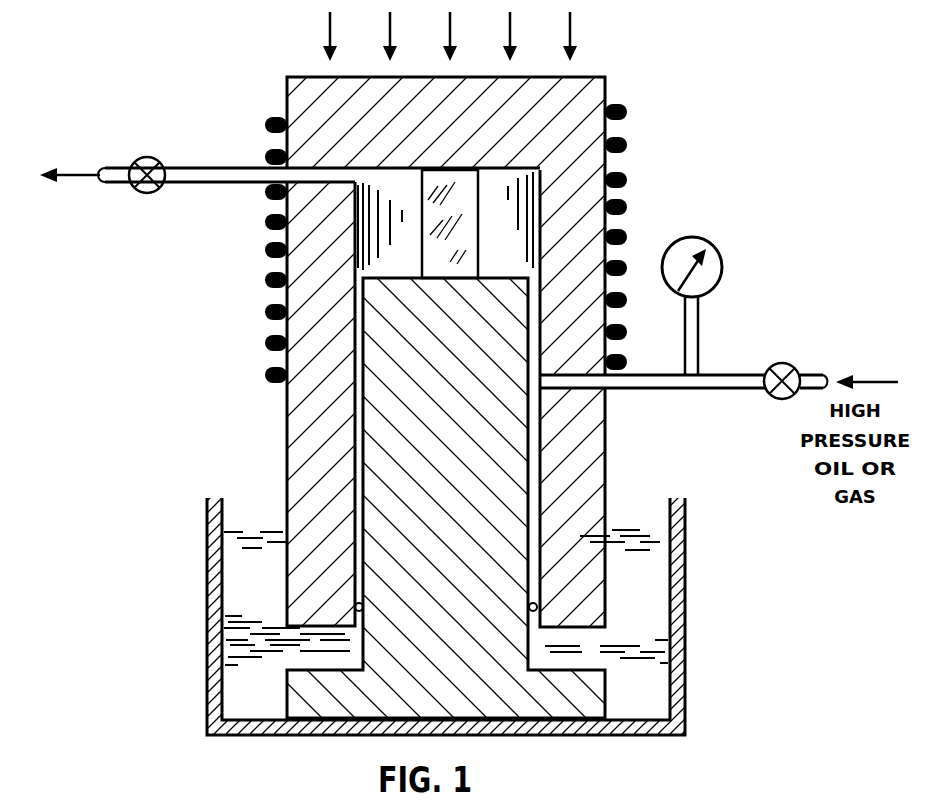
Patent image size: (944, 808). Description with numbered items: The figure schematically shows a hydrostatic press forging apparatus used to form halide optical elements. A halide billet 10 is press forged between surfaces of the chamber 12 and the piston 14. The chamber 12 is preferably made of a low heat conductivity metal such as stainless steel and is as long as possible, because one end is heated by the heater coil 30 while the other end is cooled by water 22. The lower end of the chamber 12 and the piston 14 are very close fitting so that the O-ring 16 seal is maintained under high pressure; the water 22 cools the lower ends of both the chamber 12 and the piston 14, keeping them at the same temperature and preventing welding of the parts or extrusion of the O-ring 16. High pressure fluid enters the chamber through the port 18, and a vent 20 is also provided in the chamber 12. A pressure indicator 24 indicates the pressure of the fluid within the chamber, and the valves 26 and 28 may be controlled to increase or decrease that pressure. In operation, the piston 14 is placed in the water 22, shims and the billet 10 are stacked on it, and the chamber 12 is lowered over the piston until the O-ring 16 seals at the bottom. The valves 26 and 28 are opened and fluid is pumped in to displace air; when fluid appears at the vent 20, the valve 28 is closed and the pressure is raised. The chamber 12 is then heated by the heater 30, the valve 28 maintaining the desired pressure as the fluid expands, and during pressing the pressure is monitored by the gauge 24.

The halide billet 10 is at (430, 262).
The chamber 12 is at (585, 467).
The piston 14 is at (400, 480).
The O-ring 16 is at (365, 603).
The port 18 is at (587, 383).
The vent 20 is at (332, 170).
The water 22 is at (657, 555).
The pressure indicator 24 is at (692, 237).
The valve 26 is at (782, 363).
The valve 28 is at (147, 157).
The heater coil 30 is at (625, 108).